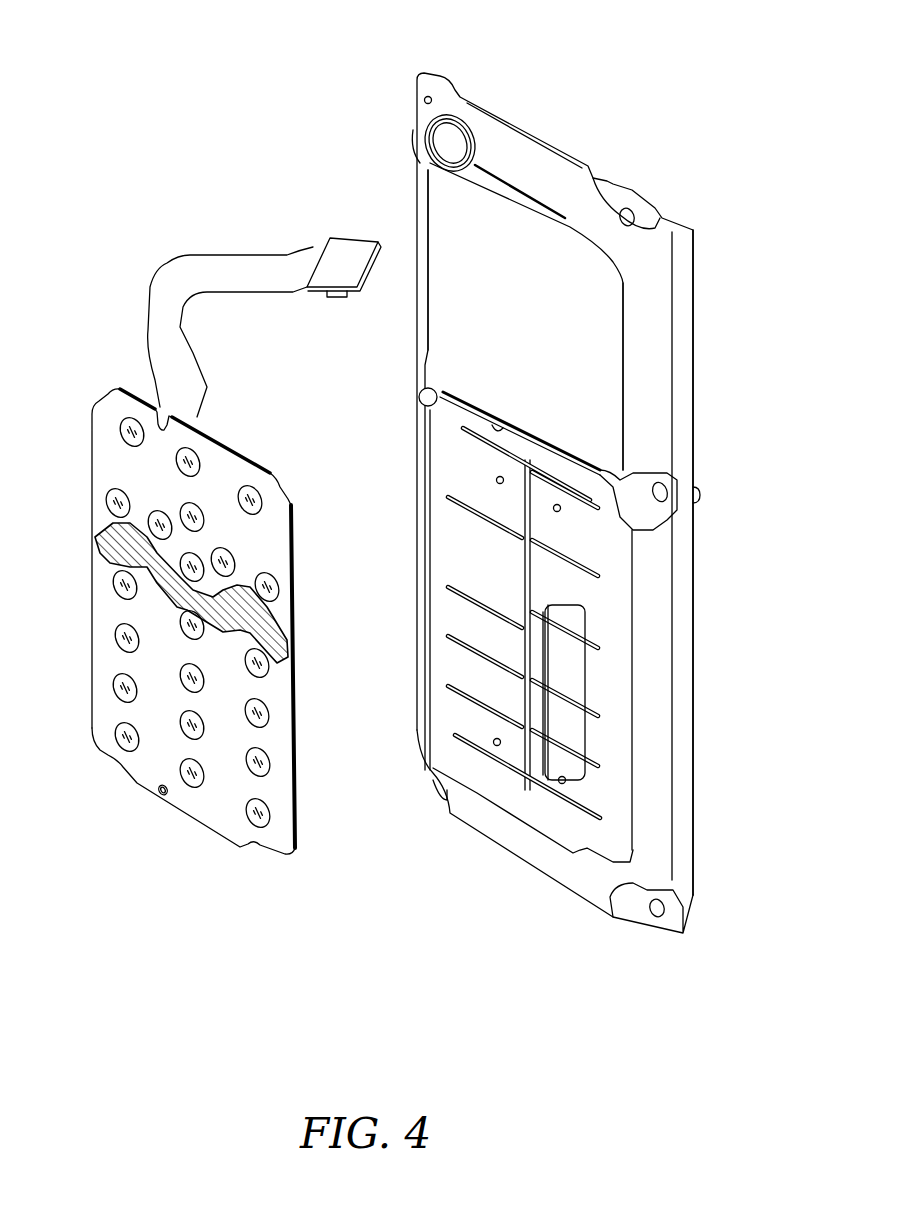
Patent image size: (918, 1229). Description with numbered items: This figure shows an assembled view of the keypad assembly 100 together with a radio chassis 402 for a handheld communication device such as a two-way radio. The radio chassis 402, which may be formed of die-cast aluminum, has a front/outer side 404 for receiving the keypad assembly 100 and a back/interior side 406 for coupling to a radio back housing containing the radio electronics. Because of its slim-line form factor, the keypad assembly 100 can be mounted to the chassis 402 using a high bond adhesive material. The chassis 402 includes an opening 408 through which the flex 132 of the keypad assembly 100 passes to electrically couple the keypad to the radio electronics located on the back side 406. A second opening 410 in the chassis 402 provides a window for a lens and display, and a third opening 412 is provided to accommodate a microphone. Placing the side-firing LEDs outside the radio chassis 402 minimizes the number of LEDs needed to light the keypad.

The keypad assembly 100 is at (92, 629).
The flex 132 is at (150, 293).
The radio chassis 402 is at (683, 935).
The front/outer side 404 is at (547, 530).
The back/interior side 406 is at (694, 366).
The opening 408 is at (587, 640).
The second opening 410 is at (457, 210).
The third opening 412 is at (440, 143).